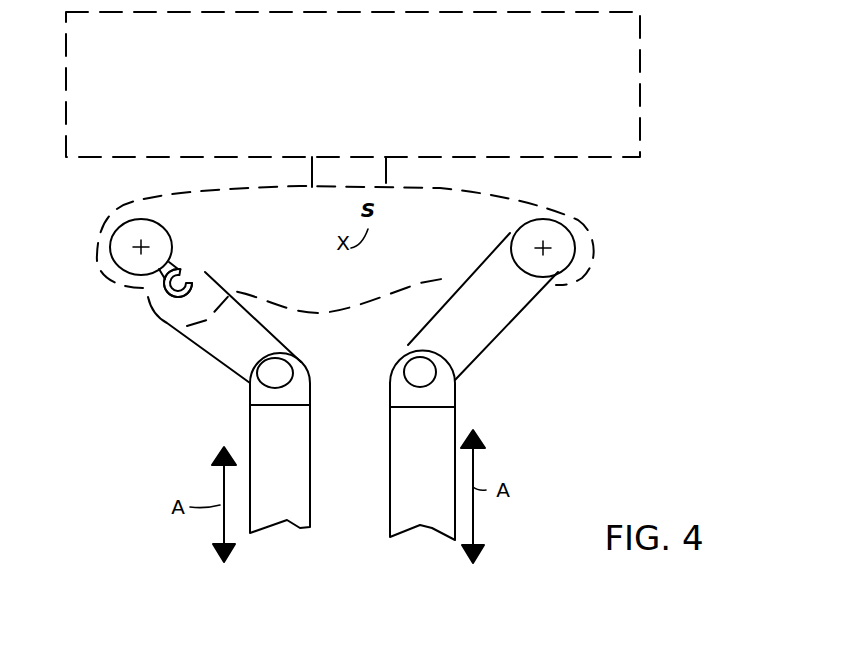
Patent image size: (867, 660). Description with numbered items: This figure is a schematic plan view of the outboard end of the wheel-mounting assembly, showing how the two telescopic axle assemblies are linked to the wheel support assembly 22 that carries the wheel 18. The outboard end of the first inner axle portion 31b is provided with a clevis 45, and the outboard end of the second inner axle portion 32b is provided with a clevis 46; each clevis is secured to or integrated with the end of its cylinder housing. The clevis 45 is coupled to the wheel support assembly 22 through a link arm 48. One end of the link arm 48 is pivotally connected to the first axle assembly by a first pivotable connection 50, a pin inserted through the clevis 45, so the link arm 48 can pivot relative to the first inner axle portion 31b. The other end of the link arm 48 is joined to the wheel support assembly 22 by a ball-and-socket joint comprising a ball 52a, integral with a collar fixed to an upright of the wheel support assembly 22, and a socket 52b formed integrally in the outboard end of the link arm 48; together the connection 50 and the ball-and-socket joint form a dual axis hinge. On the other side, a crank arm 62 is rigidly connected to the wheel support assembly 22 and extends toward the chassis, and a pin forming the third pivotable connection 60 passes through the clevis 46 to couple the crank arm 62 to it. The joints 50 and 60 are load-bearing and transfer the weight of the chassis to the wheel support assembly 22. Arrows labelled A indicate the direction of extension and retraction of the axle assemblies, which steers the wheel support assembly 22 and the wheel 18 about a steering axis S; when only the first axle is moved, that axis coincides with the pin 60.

The wheel 18 is at (636, 67).
The wheel support assembly 22 is at (575, 218).
The ball 52a is at (160, 288).
The socket 52b is at (200, 276).
The link arm 48 is at (210, 322).
The clevis 45 is at (260, 395).
The first pivotable connection 50 is at (283, 377).
The first inner axle portion 31b is at (265, 428).
The crank arm 62 is at (527, 300).
The clevis 46 is at (455, 390).
The third pivotable connection 60 is at (418, 370).
The second inner axle portion 32b is at (448, 415).